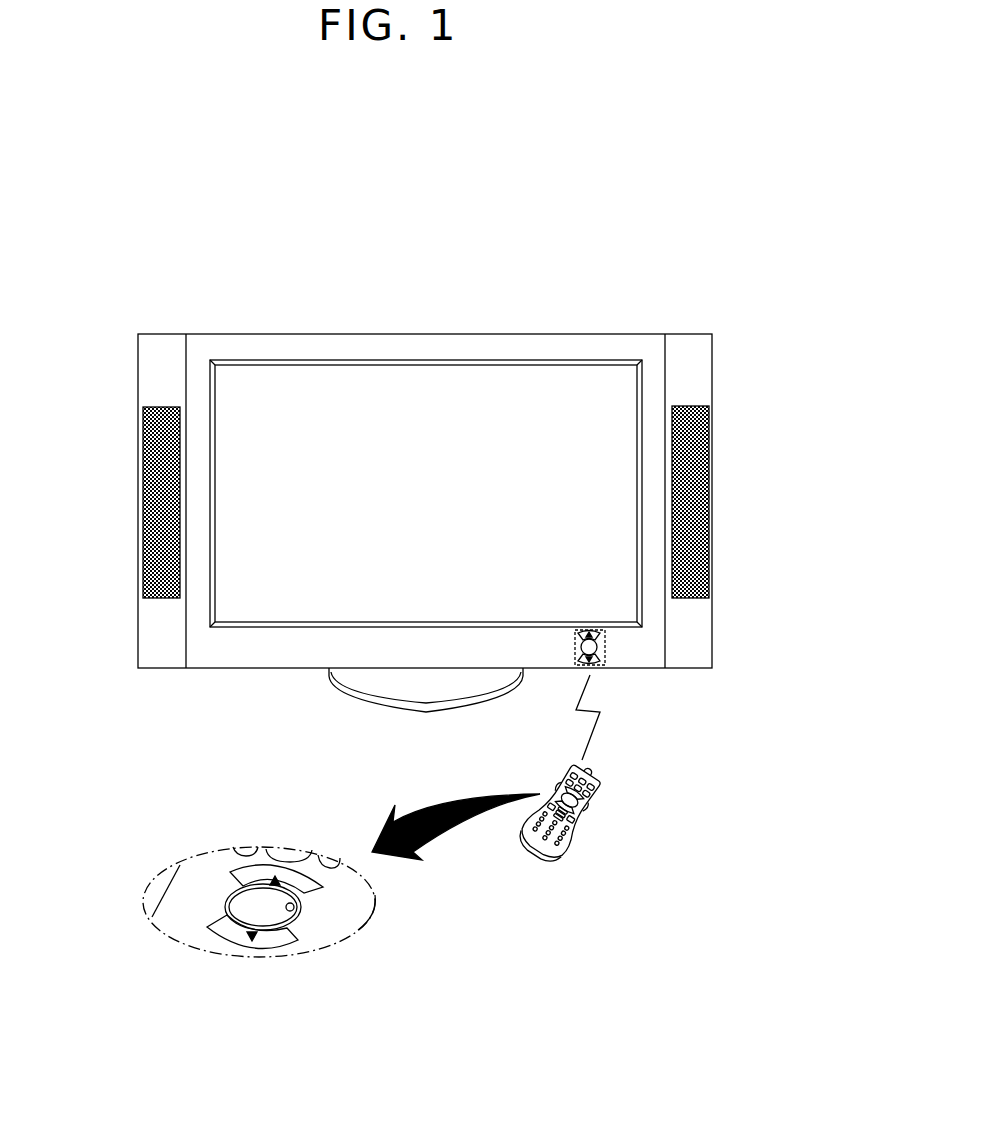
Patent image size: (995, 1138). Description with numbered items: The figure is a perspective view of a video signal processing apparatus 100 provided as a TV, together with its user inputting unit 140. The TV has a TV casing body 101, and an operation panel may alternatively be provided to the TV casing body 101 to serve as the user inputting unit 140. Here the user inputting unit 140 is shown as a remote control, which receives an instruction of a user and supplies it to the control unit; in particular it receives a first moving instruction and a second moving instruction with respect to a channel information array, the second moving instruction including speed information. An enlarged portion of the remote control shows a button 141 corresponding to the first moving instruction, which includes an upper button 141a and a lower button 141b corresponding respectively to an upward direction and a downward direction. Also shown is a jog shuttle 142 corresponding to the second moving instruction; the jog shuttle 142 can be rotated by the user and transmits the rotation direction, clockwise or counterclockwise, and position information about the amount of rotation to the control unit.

The video signal processing apparatus 100 is at (425, 470).
The TV casing body 101 is at (353, 333).
The user inputting unit 140 is at (588, 848).
The button 141 is at (284, 966).
The upper button 141a is at (320, 890).
The lower button 141b is at (254, 972).
The jog shuttle 142 is at (226, 907).